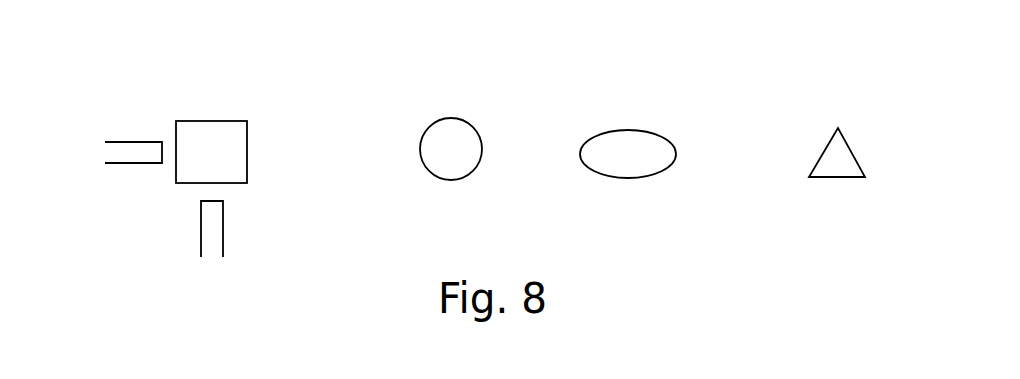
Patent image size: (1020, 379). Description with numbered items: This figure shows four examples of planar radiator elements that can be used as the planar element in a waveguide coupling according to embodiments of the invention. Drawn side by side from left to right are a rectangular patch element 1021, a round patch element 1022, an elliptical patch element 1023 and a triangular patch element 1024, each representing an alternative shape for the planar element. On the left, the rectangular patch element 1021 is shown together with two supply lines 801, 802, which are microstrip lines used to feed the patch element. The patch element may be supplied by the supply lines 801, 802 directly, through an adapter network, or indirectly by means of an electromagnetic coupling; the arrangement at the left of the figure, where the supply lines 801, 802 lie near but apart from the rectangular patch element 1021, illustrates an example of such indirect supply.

The rectangular patch element 1021 is at (213, 128).
The supply line 801 is at (135, 157).
The supply line 802 is at (213, 225).
The round patch element 1022 is at (453, 128).
The elliptical patch element 1023 is at (627, 142).
The triangular patch element 1024 is at (847, 153).